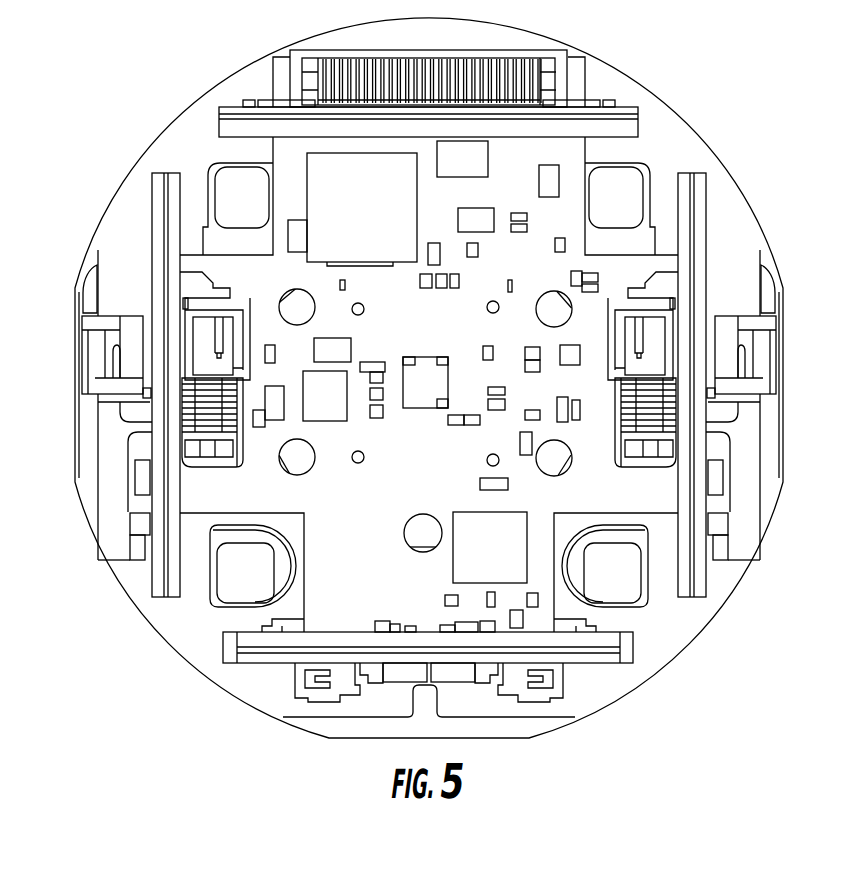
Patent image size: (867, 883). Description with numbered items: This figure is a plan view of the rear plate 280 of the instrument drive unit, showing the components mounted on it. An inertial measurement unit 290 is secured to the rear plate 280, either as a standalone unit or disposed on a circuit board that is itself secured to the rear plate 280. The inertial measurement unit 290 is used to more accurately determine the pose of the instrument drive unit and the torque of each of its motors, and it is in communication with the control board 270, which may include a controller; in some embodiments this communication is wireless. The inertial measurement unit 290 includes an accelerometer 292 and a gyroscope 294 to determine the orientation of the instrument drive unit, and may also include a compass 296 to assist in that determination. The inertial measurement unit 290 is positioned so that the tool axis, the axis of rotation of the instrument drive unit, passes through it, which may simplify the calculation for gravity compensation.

The control board 270 is at (610, 132).
The rear plate 280 is at (483, 349).
The inertial measurement unit 290 is at (423, 387).
The accelerometer 292 is at (442, 357).
The gyroscope 294 is at (408, 357).
The compass 296 is at (443, 408).